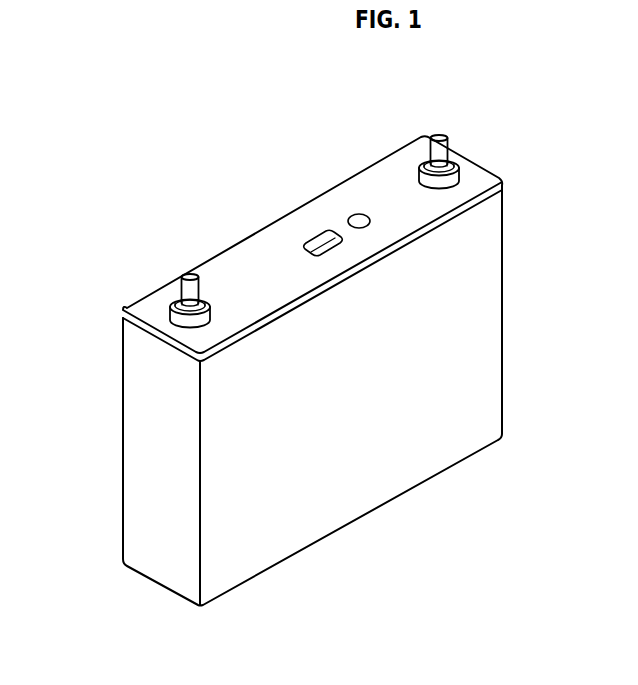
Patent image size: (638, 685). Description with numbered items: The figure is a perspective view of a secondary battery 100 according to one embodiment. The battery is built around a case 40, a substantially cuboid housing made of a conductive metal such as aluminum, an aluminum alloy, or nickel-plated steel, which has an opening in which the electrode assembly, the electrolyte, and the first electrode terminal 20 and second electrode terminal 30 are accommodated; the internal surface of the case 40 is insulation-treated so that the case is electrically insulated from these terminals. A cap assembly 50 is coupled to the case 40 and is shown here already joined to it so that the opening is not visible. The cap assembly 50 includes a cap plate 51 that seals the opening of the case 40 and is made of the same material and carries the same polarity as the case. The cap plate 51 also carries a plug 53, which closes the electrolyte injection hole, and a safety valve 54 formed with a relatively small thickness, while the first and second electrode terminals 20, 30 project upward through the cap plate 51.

The secondary battery 100 is at (85, 177).
The first electrode terminal 20 is at (182, 273).
The second electrode terminal 30 is at (445, 132).
The case 40 is at (492, 283).
The cap assembly 50 is at (393, 157).
The cap plate 51 is at (257, 247).
The plug 53 is at (357, 214).
The safety valve 54 is at (330, 240).